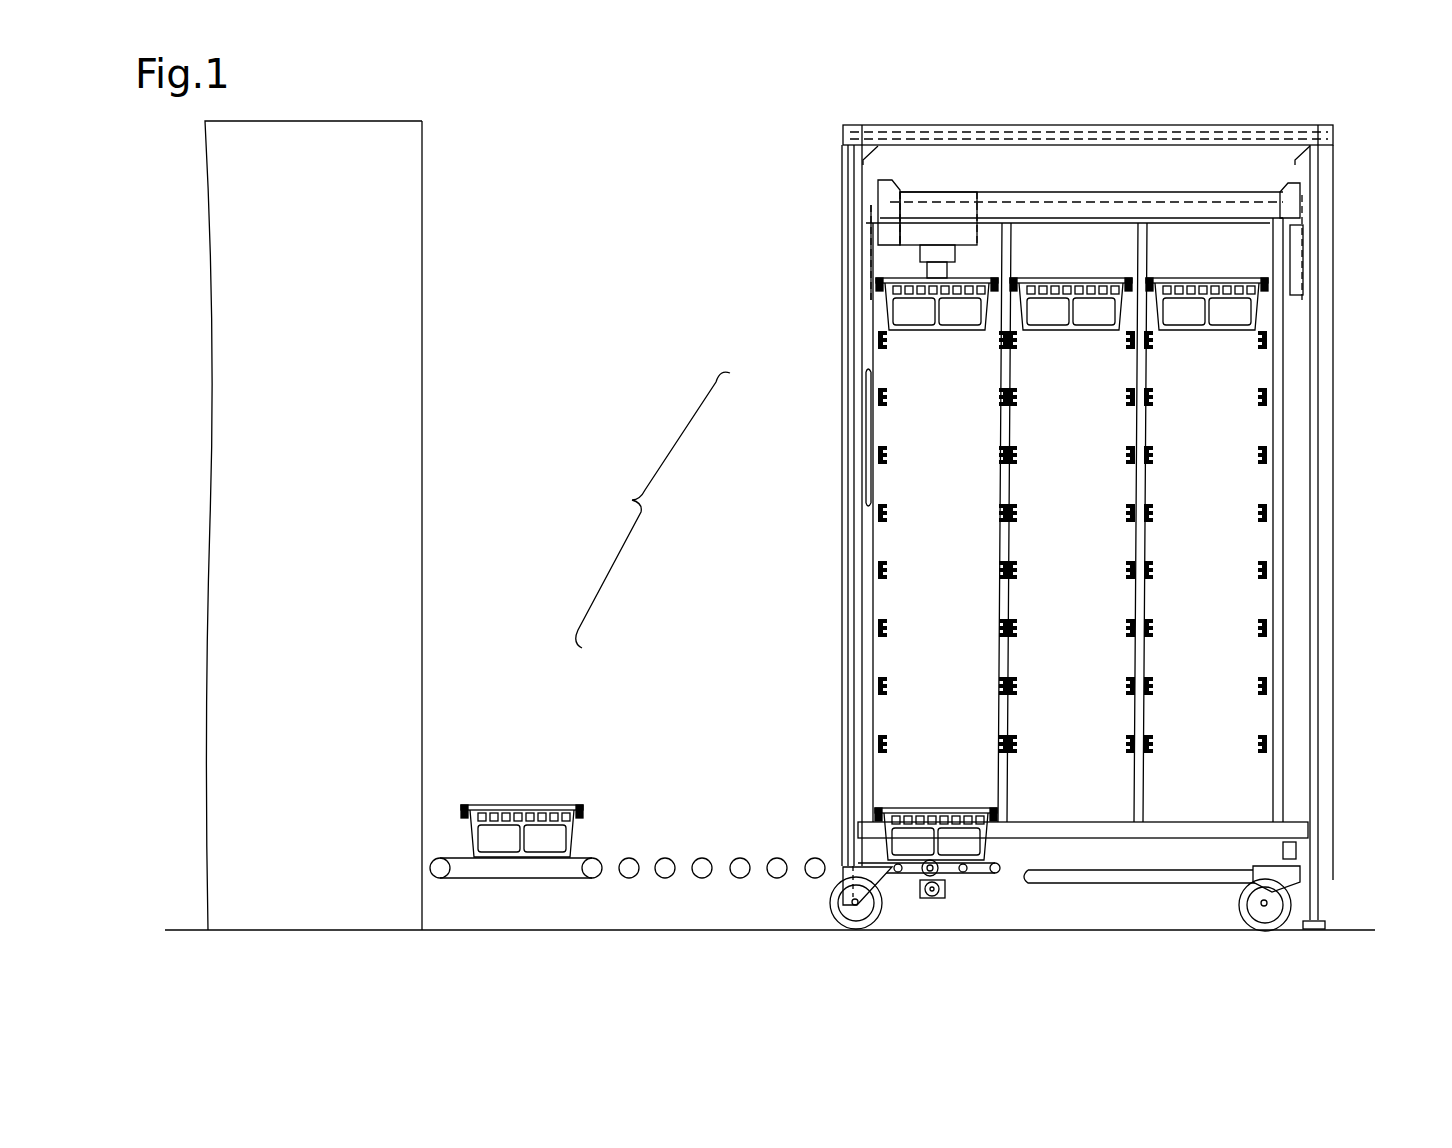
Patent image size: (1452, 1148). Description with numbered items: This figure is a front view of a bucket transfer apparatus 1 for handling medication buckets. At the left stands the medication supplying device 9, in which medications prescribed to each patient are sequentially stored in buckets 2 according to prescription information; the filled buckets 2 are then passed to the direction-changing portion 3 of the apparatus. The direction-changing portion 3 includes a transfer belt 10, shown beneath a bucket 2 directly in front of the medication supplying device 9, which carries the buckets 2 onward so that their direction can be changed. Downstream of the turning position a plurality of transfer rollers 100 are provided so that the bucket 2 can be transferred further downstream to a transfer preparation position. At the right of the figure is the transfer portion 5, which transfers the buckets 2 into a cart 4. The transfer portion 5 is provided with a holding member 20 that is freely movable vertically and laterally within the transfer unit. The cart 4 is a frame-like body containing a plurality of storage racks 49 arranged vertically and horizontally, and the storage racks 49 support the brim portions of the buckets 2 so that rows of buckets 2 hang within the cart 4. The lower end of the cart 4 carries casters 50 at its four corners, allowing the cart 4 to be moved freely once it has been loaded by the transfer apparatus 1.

The bucket transfer apparatus 1 is at (653, 510).
The bucket 2 is at (484, 815).
The direction-changing portion 3 is at (604, 738).
The cart 4 is at (1295, 242).
The transfer portion 5 is at (820, 433).
The medication supplying device 9 is at (421, 272).
The transfer belt 10 is at (550, 880).
The holding member 20 is at (920, 235).
The storage rack 49 is at (1265, 372).
The caster 50 is at (1240, 923).
The transfer roller 100 is at (703, 857).